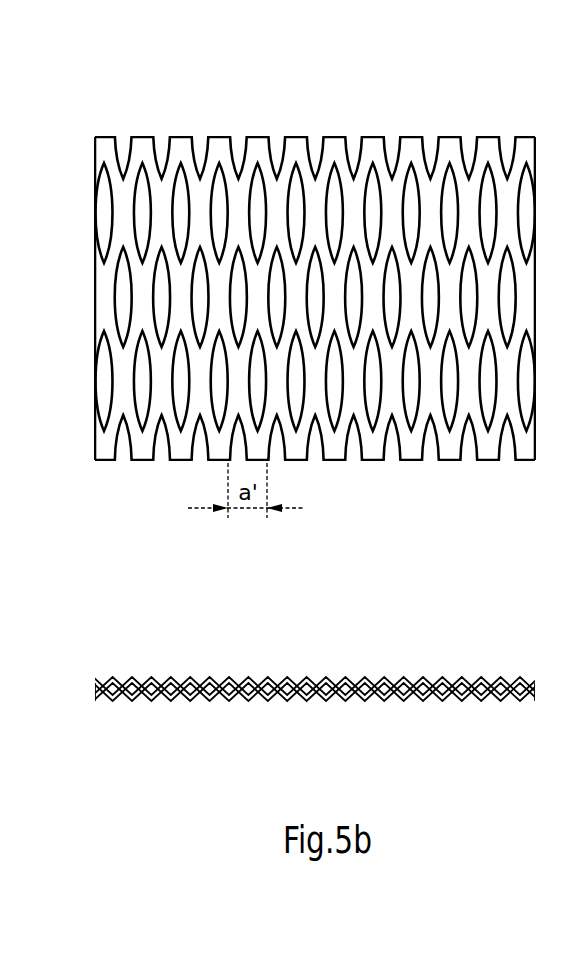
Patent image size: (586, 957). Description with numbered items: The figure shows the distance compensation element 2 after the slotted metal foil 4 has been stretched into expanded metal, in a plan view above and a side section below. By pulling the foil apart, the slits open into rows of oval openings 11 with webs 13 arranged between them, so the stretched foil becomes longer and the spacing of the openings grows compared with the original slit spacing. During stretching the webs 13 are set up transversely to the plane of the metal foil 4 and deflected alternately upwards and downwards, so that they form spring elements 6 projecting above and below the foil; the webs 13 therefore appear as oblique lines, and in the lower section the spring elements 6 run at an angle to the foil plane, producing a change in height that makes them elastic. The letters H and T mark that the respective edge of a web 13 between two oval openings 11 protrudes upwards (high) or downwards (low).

The distance compensation element 2 is at (143, 473).
The metal foil 4 is at (418, 148).
The spring elements 6 is at (317, 203).
The oval openings 11 is at (140, 188).
The webs 13 is at (142, 287).
The high edge marking H is at (148, 210).
The low edge marking T is at (127, 217).